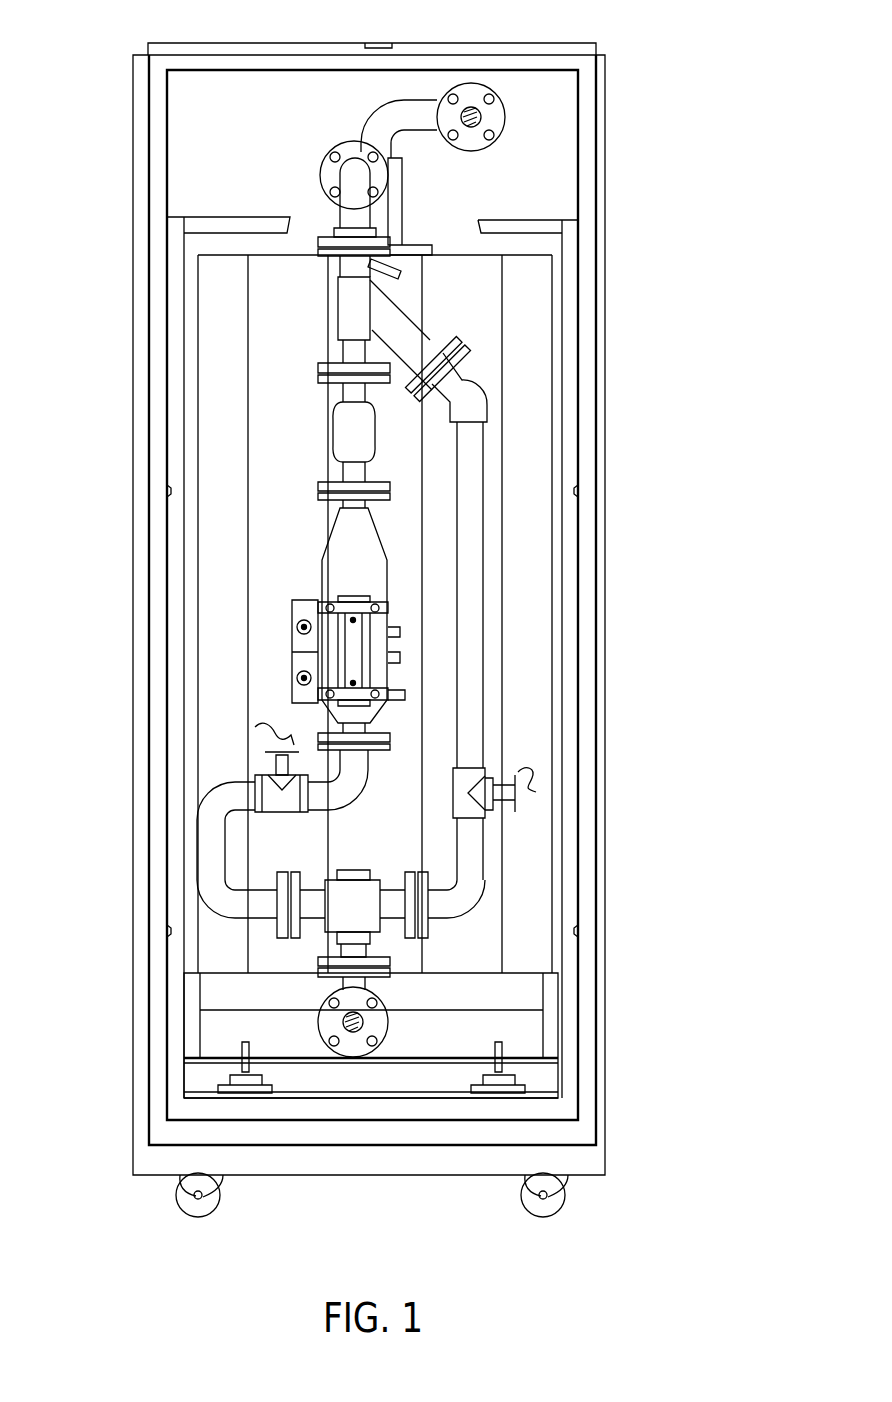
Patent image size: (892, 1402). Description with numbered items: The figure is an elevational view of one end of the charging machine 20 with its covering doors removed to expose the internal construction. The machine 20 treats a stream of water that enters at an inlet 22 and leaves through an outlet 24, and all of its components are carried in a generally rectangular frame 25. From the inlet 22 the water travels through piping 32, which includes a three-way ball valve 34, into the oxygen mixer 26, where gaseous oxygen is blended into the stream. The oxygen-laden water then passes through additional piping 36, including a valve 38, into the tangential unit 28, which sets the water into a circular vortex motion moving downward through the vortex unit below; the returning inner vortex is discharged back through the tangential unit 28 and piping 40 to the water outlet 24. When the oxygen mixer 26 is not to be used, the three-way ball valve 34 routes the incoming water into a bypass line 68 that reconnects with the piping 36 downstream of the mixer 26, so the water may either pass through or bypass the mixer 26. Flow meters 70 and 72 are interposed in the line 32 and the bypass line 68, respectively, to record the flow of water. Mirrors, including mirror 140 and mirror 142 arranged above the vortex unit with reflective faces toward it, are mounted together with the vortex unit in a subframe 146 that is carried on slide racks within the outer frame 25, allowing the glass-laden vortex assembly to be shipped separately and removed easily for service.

The charging machine 20 is at (618, 621).
The inlet 22 is at (360, 1021).
The outlet 24 is at (480, 118).
The frame 25 is at (483, 62).
The oxygen mixer 26 is at (340, 568).
The tangential unit 28 is at (410, 201).
The piping 32 is at (208, 850).
The 3-way ball valve 34 is at (352, 895).
The additional piping 36 is at (352, 217).
The valve 38 is at (349, 432).
The piping 40 is at (412, 115).
The bypass line 68 is at (468, 847).
The flow meter 70 is at (280, 762).
The flow meter 72 is at (500, 792).
The mirror 140 is at (550, 308).
The mirror 142 is at (472, 253).
The subframe 146 is at (568, 237).